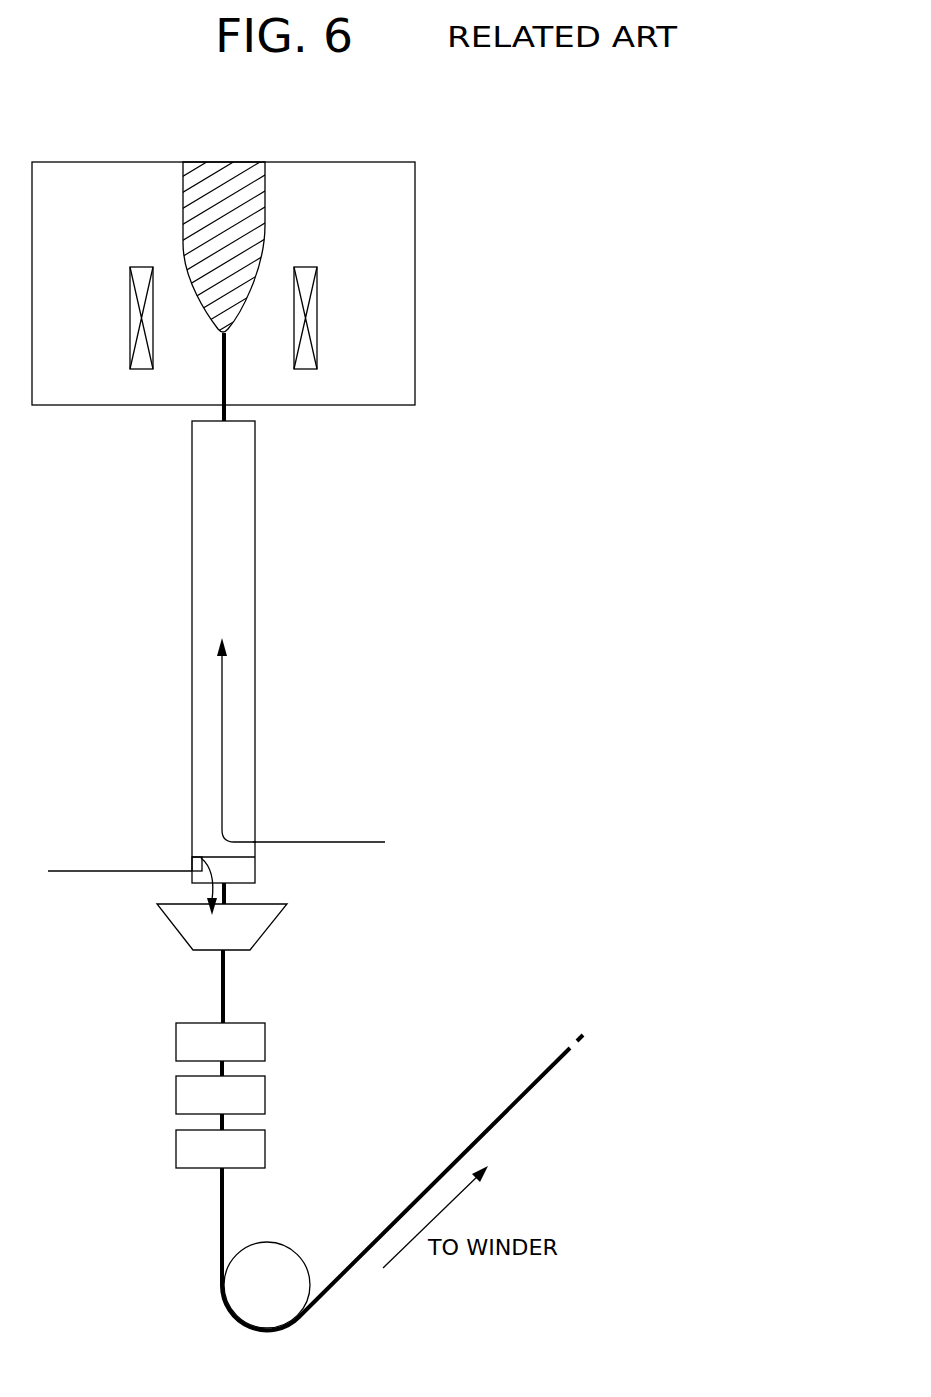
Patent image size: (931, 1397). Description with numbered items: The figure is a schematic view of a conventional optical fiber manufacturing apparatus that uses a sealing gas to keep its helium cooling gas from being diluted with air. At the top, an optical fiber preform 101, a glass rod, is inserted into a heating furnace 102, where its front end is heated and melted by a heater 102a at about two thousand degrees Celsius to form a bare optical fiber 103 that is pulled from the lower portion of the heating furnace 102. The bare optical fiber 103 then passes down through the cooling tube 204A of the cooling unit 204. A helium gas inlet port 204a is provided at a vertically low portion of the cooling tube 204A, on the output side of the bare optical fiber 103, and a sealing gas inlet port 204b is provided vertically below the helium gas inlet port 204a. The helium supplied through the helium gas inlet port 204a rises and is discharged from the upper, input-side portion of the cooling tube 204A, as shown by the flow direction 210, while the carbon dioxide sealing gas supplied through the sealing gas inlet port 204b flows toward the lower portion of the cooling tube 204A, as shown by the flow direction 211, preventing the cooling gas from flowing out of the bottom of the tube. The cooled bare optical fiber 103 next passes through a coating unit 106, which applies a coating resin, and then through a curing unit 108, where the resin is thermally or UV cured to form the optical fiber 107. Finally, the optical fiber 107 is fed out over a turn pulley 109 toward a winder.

The optical fiber preform 101 is at (265, 194).
The heating furnace 102 is at (415, 296).
The heater 102a is at (317, 338).
The bare optical fiber 103 is at (228, 380).
The cooling unit 204 is at (213, 668).
The cooling tube 204A is at (255, 513).
The helium gas inlet port 204a is at (300, 822).
The sealing gas inlet port 204b is at (192, 873).
The flow direction 210 is at (222, 760).
The flow direction 211 is at (192, 851).
The coating unit 106 is at (268, 930).
The optical fiber 107 is at (221, 1217).
The curing unit 108 is at (277, 1023).
The turn pulley 109 is at (240, 1305).